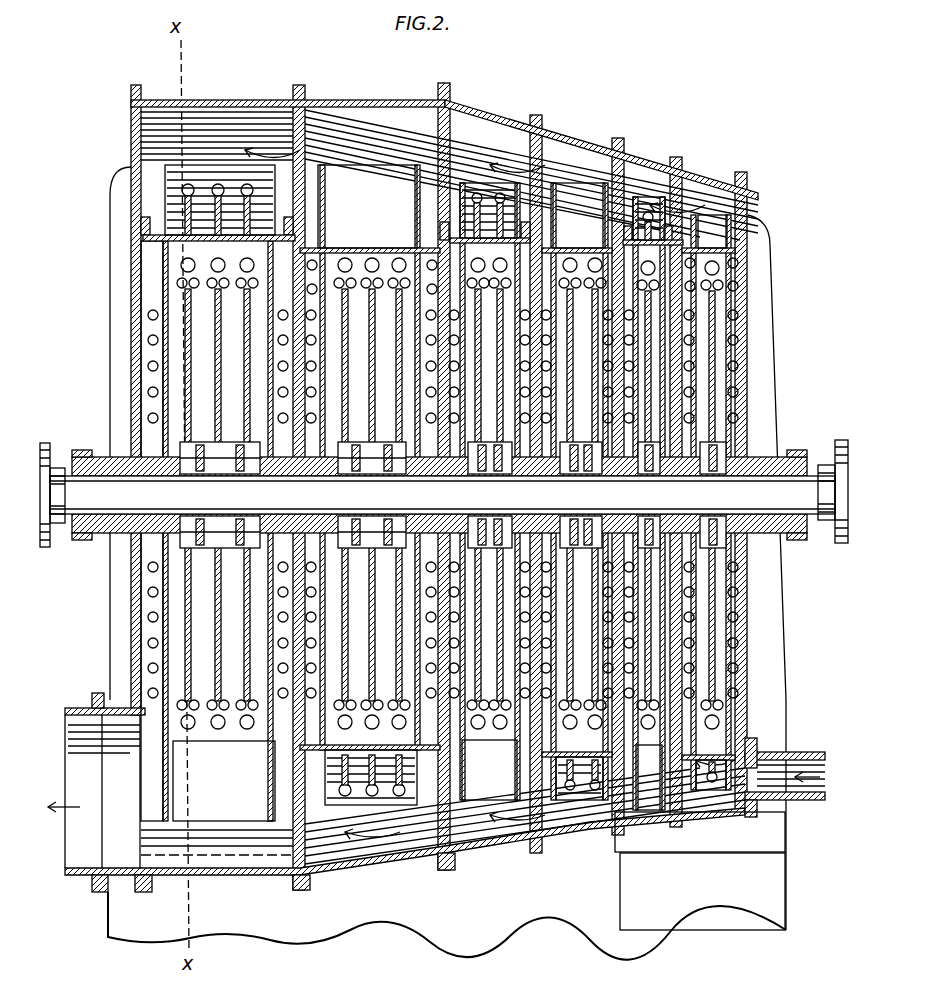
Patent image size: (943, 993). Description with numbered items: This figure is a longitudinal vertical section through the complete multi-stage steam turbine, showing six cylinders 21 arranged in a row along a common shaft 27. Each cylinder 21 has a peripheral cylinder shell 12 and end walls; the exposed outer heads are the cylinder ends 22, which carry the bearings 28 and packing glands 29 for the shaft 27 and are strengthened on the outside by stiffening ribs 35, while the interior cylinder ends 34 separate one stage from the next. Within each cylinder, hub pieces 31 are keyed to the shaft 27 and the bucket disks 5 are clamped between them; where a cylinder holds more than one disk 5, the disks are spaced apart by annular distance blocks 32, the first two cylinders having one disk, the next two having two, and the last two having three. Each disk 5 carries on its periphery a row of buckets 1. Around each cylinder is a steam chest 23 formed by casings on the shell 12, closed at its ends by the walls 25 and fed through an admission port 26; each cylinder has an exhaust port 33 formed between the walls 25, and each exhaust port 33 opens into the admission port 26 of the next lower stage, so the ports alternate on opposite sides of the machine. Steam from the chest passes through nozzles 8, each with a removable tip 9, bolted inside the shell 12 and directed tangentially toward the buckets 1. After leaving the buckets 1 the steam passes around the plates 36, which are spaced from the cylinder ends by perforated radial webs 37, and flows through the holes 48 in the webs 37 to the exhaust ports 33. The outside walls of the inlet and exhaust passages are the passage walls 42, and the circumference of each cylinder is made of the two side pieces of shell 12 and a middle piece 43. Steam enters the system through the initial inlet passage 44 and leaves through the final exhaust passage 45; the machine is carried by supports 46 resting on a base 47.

The bucket 1 is at (208, 285).
The disk 5 is at (222, 380).
The nozzle 8 is at (141, 228).
The removable tip 9 is at (215, 730).
The cylinder shell 12 is at (362, 755).
The cylinder 21 is at (148, 660).
The cylinder end wall 22 is at (131, 566).
The steam chest 23 is at (218, 184).
The wall 25 is at (778, 242).
The admission port 26 is at (688, 862).
The shaft 27 is at (442, 495).
The bearing 28 is at (125, 455).
The packing gland 29 is at (70, 452).
The hub piece 31 is at (198, 446).
The annular distance block 32 is at (200, 548).
The exhaust port 33 is at (358, 140).
The interior cylinder end 34 is at (305, 248).
The stiffening rib 35 is at (110, 630).
The plate 36 is at (150, 337).
The perforated radial web 37 is at (128, 293).
The passage wall 42 is at (245, 100).
The middle piece 43 is at (180, 236).
The initial inlet passage 44 is at (798, 777).
The final exhaust passage 45 is at (80, 850).
The support 46 is at (680, 840).
The base 47 is at (760, 874).
The hole 48 is at (146, 368).